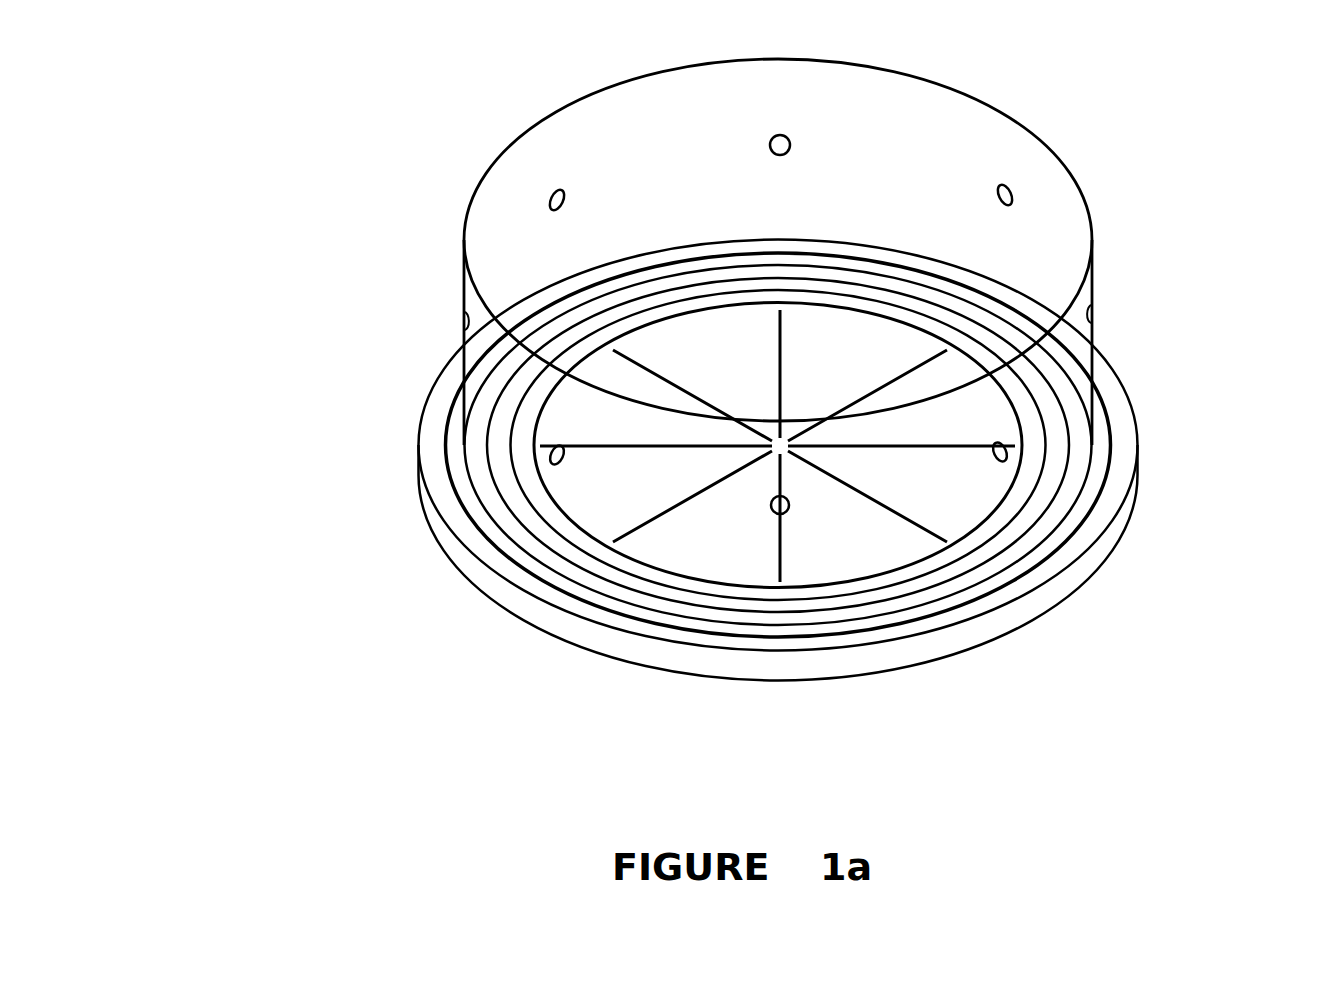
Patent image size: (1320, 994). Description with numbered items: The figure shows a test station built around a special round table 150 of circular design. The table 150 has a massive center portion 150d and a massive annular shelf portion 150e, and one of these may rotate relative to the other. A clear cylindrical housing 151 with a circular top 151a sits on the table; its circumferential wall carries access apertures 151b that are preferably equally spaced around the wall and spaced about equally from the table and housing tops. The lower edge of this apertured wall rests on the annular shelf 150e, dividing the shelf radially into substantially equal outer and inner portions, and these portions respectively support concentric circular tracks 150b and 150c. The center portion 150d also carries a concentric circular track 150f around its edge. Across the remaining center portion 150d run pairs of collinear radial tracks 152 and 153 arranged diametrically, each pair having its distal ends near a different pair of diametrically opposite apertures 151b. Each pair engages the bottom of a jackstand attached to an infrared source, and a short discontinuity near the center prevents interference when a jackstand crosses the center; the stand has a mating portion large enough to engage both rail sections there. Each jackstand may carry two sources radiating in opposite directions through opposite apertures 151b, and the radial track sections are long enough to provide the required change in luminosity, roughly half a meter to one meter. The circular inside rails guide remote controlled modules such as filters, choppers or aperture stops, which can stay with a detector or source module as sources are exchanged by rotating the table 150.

The table 150 is at (725, 452).
The concentric circular track 150b is at (1115, 450).
The concentric circular track 150c is at (1070, 433).
The center portion 150d is at (1020, 407).
The annular shelf portion 150e is at (1090, 533).
The concentric circular track 150f is at (1090, 310).
The clear housing 151 is at (838, 238).
The circular top 151a is at (875, 95).
The access apertures 151b is at (770, 142).
The radial track 152 is at (614, 446).
The radial track 153 is at (940, 446).